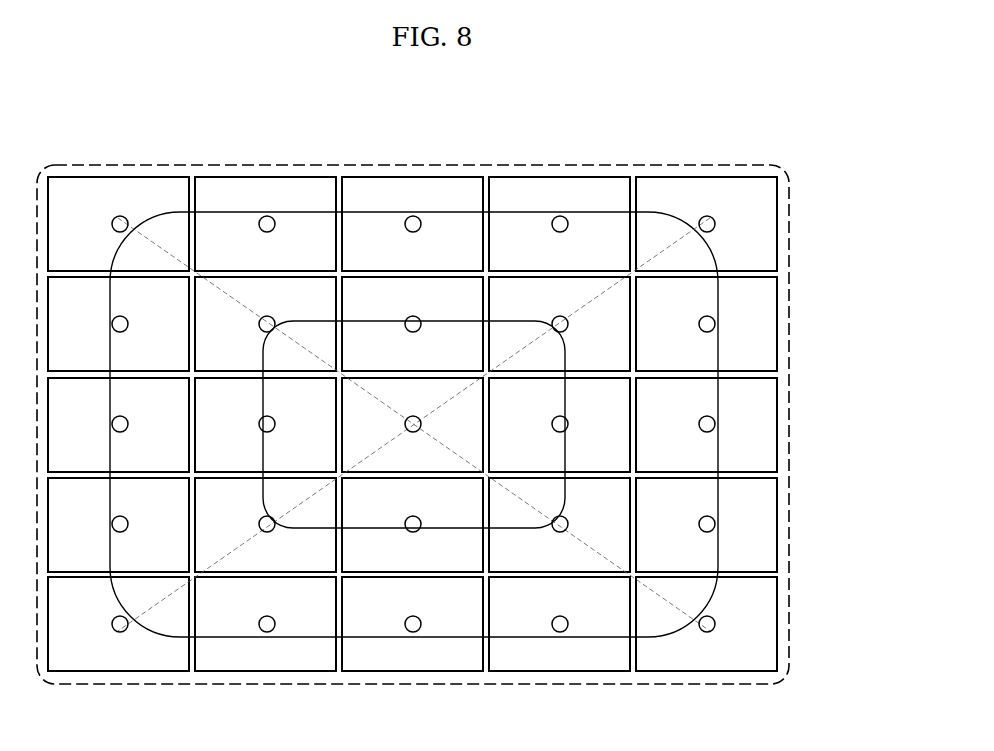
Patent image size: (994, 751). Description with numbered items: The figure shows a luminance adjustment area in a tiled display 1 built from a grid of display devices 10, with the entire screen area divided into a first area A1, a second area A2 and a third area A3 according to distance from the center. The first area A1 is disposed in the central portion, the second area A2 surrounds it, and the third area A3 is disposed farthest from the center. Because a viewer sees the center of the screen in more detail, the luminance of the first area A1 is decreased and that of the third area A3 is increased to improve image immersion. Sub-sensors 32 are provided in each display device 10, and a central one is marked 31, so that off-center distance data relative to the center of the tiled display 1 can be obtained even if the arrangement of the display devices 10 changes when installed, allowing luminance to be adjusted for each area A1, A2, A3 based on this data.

The tiled display 1 is at (565, 136).
The display device 10 is at (707, 177).
The central light source / light emitting element 31 is at (415, 432).
The sub-sensor 32 is at (707, 633).
The first area A1 is at (562, 400).
The second area A2 is at (717, 455).
The third area A3 is at (789, 512).